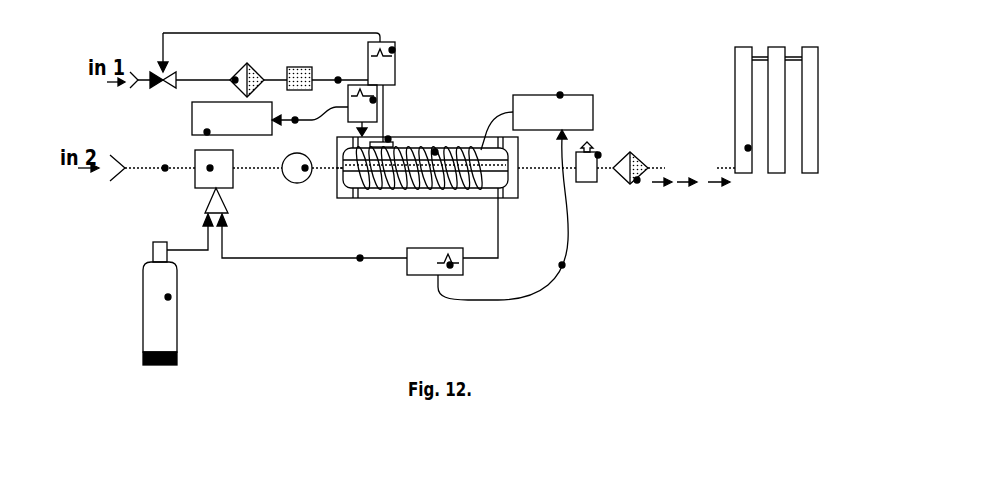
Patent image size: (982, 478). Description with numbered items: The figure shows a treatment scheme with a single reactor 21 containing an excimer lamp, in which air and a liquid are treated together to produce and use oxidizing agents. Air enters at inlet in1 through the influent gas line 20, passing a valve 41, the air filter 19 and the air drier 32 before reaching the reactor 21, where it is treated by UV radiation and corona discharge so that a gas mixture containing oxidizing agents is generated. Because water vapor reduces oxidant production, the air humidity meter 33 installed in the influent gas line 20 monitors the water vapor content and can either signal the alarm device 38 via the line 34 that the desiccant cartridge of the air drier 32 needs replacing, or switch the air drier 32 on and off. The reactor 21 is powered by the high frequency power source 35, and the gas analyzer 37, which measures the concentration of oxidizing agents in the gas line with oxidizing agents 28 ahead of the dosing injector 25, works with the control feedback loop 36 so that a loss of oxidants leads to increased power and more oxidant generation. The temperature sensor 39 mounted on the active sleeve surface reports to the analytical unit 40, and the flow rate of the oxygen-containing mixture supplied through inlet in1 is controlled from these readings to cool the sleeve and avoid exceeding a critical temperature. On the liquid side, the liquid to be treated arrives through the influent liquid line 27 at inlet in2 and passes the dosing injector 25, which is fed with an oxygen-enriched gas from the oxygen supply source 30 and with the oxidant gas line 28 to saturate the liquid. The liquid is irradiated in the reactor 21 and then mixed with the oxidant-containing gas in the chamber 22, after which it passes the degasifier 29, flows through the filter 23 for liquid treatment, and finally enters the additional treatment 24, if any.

The air filter 19 is at (235, 80).
The influent gas line 20 is at (338, 80).
The reactor 21 is at (435, 152).
The chamber for mixing of liquid being treated with oxidizing agents 22 is at (305, 168).
The filter for liquid treatment 23 is at (637, 180).
The additional treatment of liquid 24 is at (748, 148).
The dosing injector 25 is at (210, 168).
The influent liquid line 27 is at (165, 168).
The gas line with oxidizing agents 28 is at (360, 258).
The degasifier 29 is at (598, 155).
The oxygen supply source 30 is at (168, 297).
The air drier 32 is at (290, 69).
The air humidity meter 33 is at (373, 100).
The line from air humidity meter to alarm device 34 is at (295, 120).
The high frequency power source 35 is at (560, 95).
The control feedback loop 36 is at (562, 265).
The gas analyzer 37 is at (450, 265).
The alarm device 38 is at (207, 132).
The temperature sensor 39 is at (388, 140).
The analytical unit 40 is at (390, 52).
The valve 41 is at (152, 83).